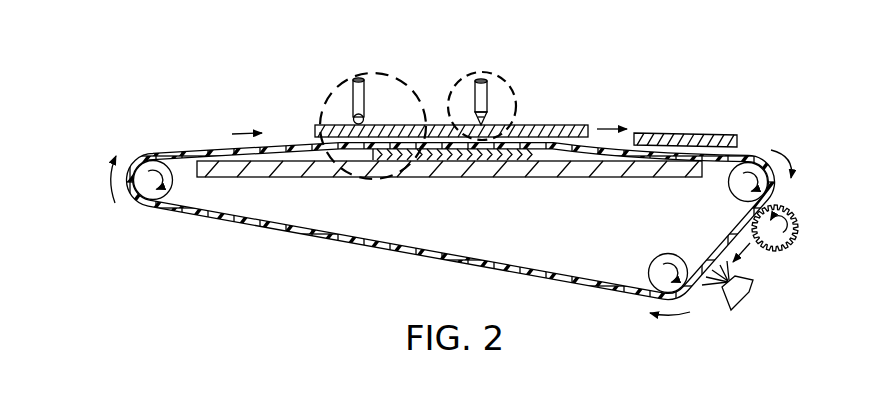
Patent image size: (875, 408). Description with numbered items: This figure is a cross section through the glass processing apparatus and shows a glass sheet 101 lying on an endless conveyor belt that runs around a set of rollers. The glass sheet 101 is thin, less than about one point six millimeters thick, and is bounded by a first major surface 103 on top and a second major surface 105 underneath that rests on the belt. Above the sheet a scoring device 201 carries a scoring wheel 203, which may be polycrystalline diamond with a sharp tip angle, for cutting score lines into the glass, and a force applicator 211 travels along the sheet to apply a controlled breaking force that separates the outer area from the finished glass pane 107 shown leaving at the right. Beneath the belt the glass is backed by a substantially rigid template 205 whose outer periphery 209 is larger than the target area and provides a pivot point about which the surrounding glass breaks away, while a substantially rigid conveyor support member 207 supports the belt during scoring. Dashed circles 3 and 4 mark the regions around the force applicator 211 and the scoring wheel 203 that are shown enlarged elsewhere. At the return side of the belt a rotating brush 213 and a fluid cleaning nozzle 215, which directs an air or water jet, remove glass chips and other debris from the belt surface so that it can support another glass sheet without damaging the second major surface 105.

The detail view region of FIG. 3 is at (372, 73).
The detail view region of FIG. 4 is at (487, 73).
The glass sheet 101 is at (583, 124).
The first major surface 103 is at (569, 121).
The second major surface 105 is at (553, 150).
The glass pane 107 is at (692, 133).
The scoring device 201 is at (476, 82).
The scoring wheel 203 is at (488, 114).
The template 205 is at (447, 153).
The conveyor support member 207 is at (308, 178).
The outer periphery 209 is at (365, 161).
The force applicator 211 is at (353, 100).
The rotating brush 213 is at (797, 226).
The fluid cleaning nozzle 215 is at (740, 290).